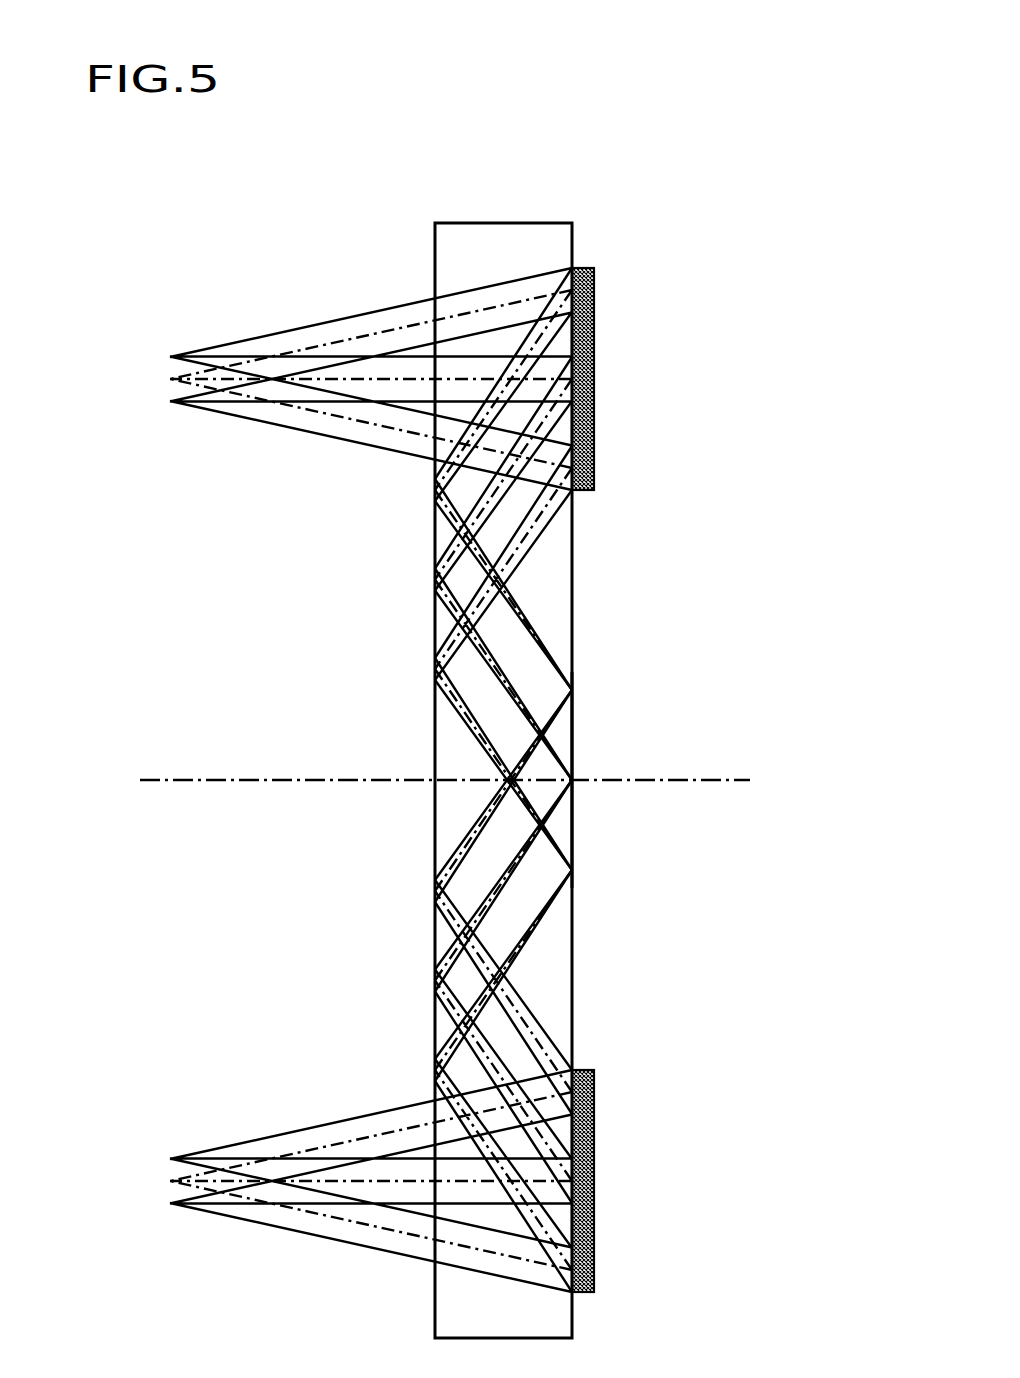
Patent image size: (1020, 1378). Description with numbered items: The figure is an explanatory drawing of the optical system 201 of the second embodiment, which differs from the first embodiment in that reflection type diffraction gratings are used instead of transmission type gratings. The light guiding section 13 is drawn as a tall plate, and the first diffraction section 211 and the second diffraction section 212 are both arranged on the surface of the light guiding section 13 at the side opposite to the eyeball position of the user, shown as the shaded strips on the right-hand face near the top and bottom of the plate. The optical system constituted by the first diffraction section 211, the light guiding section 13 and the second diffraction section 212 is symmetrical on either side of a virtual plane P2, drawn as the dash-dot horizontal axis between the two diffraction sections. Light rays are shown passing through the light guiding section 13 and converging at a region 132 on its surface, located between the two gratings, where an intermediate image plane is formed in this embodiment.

The optical system 201 is at (692, 89).
The light guiding section 13 is at (510, 222).
The first diffraction section 211 is at (598, 367).
The second diffraction section 212 is at (598, 1105).
The region 132 is at (588, 673).
The virtual plane P2 is at (276, 779).